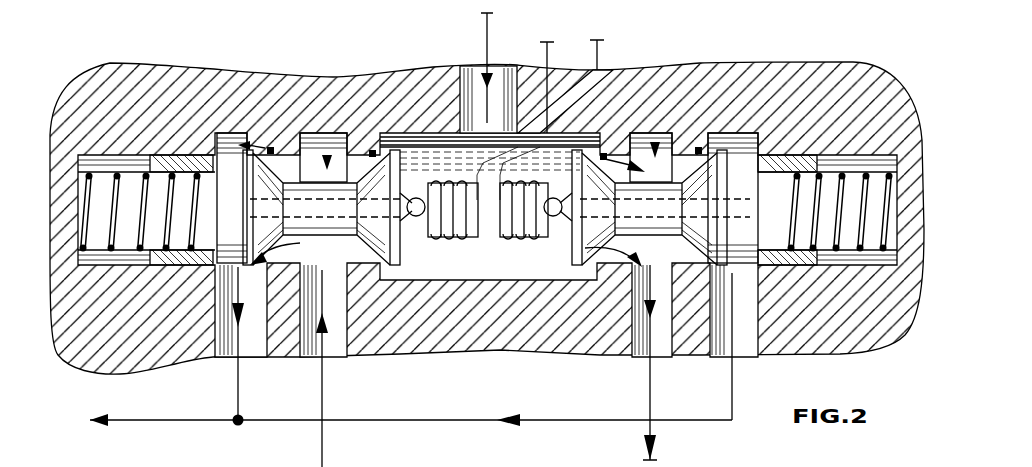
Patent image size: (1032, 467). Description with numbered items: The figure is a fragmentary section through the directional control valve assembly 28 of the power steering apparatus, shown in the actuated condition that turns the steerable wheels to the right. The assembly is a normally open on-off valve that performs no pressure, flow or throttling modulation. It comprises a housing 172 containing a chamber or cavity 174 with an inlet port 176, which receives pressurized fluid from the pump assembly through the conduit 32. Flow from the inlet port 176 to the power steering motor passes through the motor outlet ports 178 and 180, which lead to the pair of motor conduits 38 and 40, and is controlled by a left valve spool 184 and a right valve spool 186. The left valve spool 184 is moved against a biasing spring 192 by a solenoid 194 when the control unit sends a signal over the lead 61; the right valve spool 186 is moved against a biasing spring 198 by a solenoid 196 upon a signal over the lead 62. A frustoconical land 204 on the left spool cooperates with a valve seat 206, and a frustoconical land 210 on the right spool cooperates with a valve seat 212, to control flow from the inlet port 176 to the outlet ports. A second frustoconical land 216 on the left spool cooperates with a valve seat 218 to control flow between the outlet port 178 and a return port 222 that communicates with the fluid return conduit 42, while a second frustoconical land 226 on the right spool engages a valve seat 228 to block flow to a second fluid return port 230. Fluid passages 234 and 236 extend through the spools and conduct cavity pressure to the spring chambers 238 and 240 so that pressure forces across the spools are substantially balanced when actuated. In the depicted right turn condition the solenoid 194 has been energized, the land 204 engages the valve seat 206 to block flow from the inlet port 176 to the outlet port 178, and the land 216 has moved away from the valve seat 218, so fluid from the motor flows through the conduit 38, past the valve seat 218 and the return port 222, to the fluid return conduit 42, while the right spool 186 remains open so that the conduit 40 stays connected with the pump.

The directional control valve assembly 28 is at (877, 62).
The conduit 32 is at (484, 40).
The conduit 38 is at (320, 394).
The conduit 40 is at (652, 392).
The fluid return conduit 42 is at (183, 420).
The lead 61 is at (545, 57).
The lead 62 is at (597, 57).
The housing 172 is at (88, 88).
The cavity 174 is at (395, 133).
The inlet port 176 is at (470, 133).
The motor outlet port 178 is at (334, 283).
The motor outlet port 180 is at (641, 290).
The left valve spool 184 is at (327, 156).
The right valve spool 186 is at (655, 143).
The biasing spring 192 is at (100, 262).
The solenoid 194 is at (470, 245).
The solenoid 196 is at (507, 243).
The biasing spring 198 is at (858, 243).
The frustoconical land 204 is at (387, 244).
The valve seat 206 is at (368, 267).
The frustoconical land 210 is at (567, 243).
The valve seat 212 is at (604, 150).
The second frustoconical land 216 is at (258, 176).
The valve seat 218 is at (272, 147).
The return port 222 is at (224, 298).
The second frustoconical land 226 is at (708, 193).
The valve seat 228 is at (702, 147).
The second fluid return port 230 is at (748, 285).
The fluid passage 234 is at (342, 197).
The fluid passage 236 is at (668, 199).
The spring chamber 238 is at (128, 257).
The spring chamber 240 is at (873, 257).